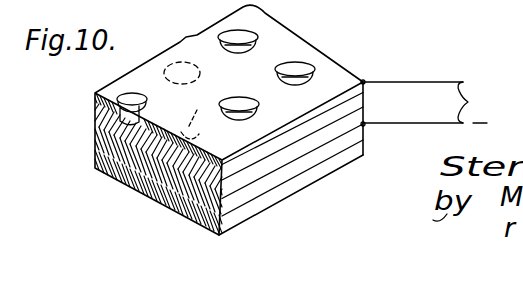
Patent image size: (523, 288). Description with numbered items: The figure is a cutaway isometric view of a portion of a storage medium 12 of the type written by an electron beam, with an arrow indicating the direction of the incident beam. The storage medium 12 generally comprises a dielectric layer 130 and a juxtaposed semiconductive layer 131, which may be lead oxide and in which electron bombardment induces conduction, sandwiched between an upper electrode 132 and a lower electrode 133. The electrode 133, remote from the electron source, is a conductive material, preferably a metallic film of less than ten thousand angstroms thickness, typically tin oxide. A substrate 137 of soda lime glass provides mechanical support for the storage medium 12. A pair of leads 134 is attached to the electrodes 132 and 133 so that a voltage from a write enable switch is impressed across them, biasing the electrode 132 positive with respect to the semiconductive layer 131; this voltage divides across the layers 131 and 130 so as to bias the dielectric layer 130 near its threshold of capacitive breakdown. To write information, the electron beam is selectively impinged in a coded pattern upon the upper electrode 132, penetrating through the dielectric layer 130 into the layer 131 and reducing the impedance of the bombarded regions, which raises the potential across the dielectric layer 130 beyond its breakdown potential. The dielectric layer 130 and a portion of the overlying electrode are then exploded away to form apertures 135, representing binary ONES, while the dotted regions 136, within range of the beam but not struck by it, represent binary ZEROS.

The storage medium 12 is at (322, 186).
The dielectric layer 130 is at (330, 109).
The semiconductive layer 131 is at (325, 126).
The electrode 132 is at (363, 92).
The electrode 133 is at (320, 147).
The leads 134 is at (430, 100).
The apertures 135 is at (240, 104).
The regions 136 is at (200, 79).
The substrate 137 is at (272, 191).